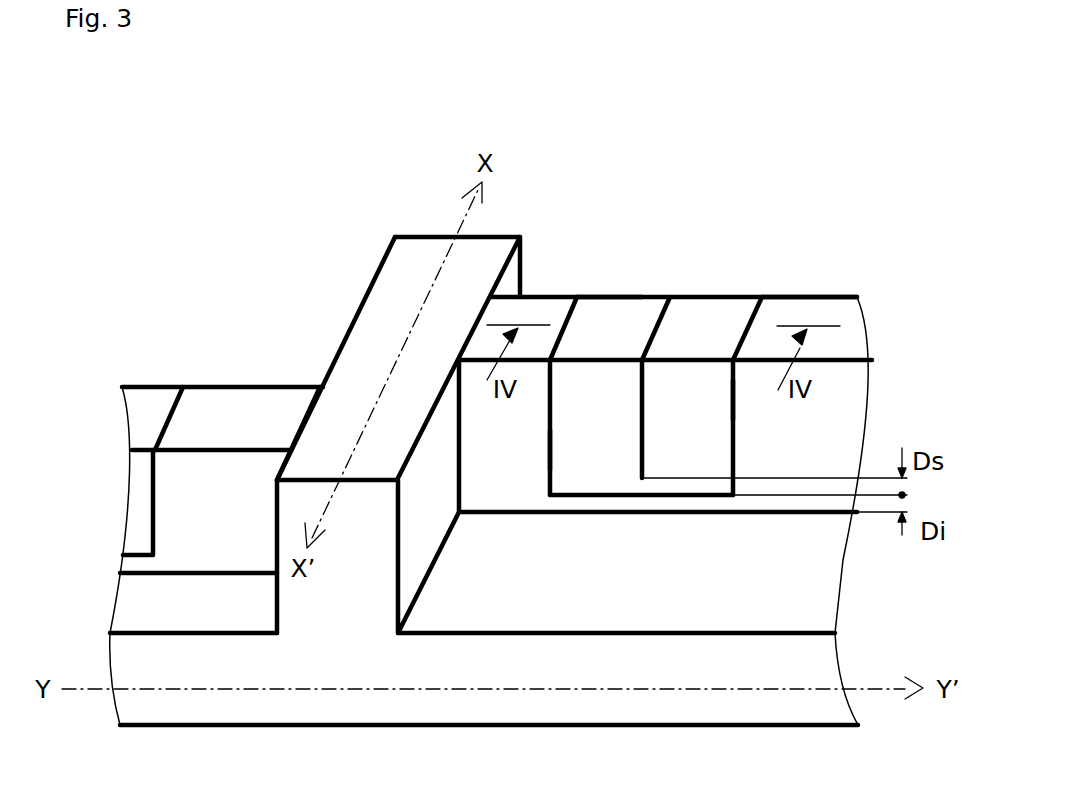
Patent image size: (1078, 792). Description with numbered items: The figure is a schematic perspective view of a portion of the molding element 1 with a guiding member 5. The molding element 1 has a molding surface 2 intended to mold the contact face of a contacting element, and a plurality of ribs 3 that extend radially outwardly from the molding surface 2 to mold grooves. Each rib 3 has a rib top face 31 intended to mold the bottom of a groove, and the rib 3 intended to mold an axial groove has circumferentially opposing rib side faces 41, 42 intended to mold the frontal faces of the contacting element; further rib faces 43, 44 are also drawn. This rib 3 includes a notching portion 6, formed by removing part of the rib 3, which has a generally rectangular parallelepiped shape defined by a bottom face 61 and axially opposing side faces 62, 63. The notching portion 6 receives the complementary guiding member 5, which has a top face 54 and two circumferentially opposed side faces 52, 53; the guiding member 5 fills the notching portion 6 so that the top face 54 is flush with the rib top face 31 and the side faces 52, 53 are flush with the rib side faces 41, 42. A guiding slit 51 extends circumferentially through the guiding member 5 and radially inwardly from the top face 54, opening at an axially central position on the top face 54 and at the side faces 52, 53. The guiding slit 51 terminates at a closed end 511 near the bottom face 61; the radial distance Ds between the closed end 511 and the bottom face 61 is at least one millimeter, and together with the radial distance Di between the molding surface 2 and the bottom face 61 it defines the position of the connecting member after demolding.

The molding element 1 is at (203, 248).
The molding surface 2 is at (171, 620).
The rib 3 is at (415, 237).
The guiding member 5 is at (147, 410).
The rib top face 31 is at (818, 317).
The rib side face 41 is at (206, 533).
The rib side face 42 is at (265, 387).
The side surface of rib 43 is at (425, 515).
The side surface of rib 44 is at (365, 297).
The guiding slit 51 is at (651, 313).
The side face of guiding member 52 is at (590, 387).
The side face of guiding member 53 is at (684, 317).
The top face of guiding member 54 is at (610, 315).
The closed end 511 is at (656, 490).
The notching portion 6 is at (724, 451).
The bottom face 61 is at (705, 490).
The side face of notching portion 62 is at (724, 395).
The side face of notching portion 63 is at (558, 440).